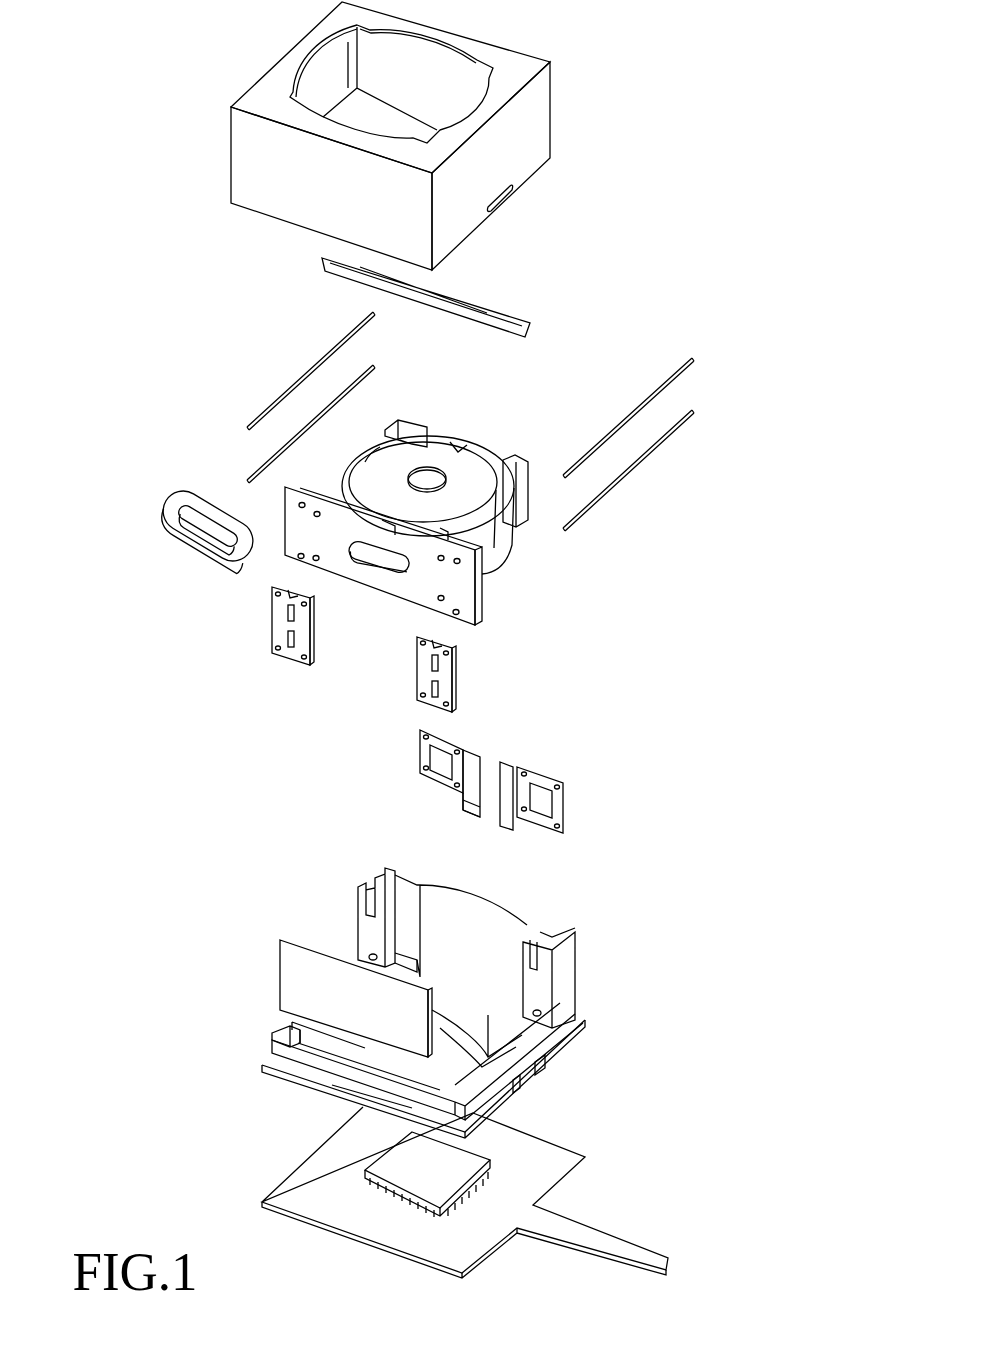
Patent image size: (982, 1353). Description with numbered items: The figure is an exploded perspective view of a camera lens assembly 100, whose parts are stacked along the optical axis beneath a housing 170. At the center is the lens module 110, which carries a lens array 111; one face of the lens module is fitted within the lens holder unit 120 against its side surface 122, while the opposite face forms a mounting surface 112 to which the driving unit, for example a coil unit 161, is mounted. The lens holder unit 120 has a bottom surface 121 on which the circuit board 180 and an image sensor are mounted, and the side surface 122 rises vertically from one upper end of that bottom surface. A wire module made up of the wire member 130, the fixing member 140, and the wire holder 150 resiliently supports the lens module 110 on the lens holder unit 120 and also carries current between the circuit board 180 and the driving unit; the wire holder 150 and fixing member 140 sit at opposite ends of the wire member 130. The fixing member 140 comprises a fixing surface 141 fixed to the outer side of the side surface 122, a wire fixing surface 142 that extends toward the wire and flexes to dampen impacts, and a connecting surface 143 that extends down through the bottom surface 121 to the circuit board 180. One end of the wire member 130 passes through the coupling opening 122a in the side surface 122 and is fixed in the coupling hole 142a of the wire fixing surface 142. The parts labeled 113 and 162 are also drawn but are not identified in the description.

The camera lens assembly 100 is at (139, 76).
The housing 170 is at (542, 117).
The wire member 130 is at (262, 418).
The coil unit 161 is at (172, 518).
The lens module 110 is at (396, 535).
The lens array 111 is at (464, 470).
The mounting surface 112 is at (478, 600).
The coupling holes 113 is at (298, 556).
The wire holder 150 is at (303, 637).
The fixing member 140 is at (421, 789).
The fixing surface 141 is at (445, 778).
The wire fixing surface 142 is at (420, 752).
The connecting surface 143 is at (470, 805).
The coupling hole 142a is at (556, 832).
The lens holder unit 120 is at (499, 1003).
The bottom surface 121 is at (548, 1040).
The side surface 122 is at (526, 967).
The coupling opening 122a is at (545, 1003).
The plate member 162 is at (290, 978).
The circuit board 180 is at (530, 1150).